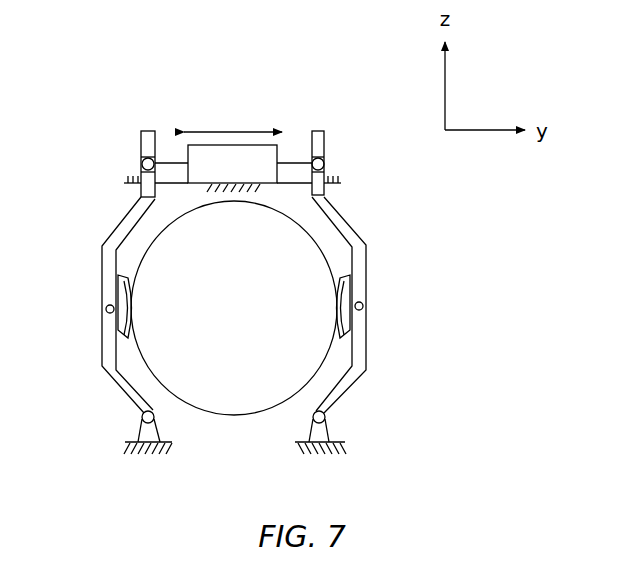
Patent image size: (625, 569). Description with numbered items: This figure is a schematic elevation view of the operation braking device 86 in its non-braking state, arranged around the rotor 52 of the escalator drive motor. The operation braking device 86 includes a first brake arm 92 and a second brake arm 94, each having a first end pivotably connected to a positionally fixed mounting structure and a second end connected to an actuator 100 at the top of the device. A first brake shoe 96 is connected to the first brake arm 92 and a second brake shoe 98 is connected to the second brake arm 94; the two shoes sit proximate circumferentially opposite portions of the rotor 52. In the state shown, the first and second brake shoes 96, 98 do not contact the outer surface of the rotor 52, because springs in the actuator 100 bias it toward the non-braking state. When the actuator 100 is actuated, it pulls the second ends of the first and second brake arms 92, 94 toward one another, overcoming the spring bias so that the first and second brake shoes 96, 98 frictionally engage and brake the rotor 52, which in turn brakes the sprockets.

The rotor 52 is at (223, 321).
The operation braking device 86 is at (129, 122).
The first brake arm 92 is at (126, 228).
The second brake arm 94 is at (346, 232).
The first brake shoe 96 is at (118, 293).
The second brake shoe 98 is at (350, 295).
The actuator 100 is at (236, 112).